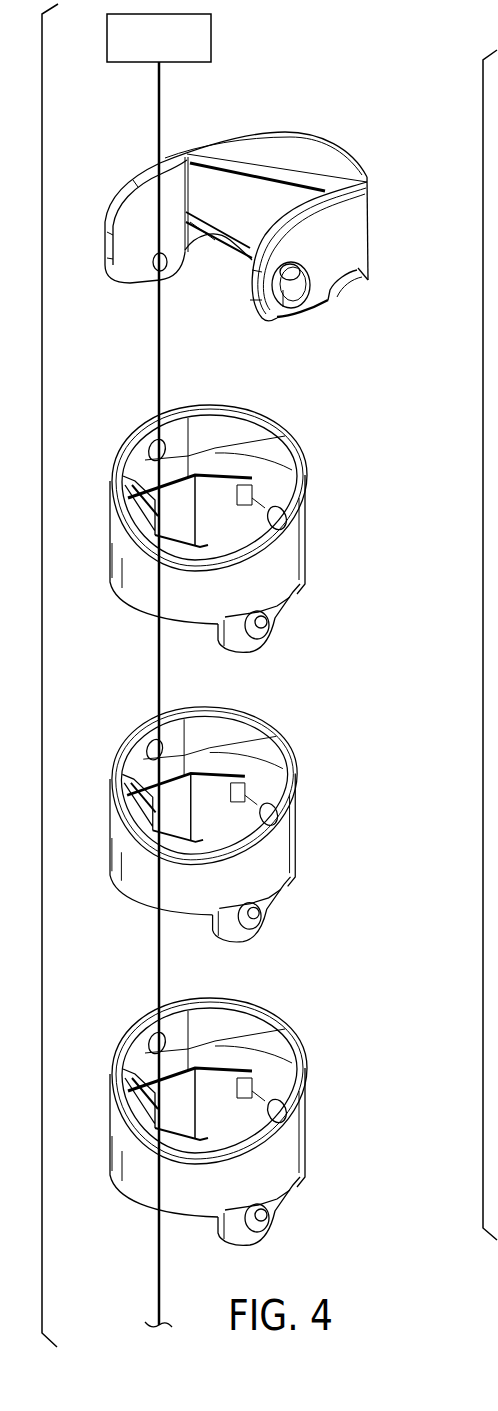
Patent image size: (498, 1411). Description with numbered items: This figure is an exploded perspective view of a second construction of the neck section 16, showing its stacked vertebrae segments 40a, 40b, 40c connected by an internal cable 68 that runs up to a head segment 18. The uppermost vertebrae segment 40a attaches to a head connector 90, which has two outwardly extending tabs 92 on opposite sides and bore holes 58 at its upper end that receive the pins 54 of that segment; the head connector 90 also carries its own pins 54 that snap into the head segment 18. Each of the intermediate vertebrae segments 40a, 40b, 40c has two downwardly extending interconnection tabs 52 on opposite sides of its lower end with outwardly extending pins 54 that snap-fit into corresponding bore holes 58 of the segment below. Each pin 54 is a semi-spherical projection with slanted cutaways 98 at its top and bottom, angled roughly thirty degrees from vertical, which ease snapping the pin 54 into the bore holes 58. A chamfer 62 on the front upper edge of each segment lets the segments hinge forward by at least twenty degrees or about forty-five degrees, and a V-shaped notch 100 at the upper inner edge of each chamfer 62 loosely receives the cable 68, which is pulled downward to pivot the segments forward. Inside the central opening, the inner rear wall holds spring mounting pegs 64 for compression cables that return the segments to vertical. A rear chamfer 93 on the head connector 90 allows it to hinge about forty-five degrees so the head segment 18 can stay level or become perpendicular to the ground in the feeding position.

The neck section 16 is at (269, 216).
The head segment 18 is at (211, 38).
The uppermost vertebrae segment 40a is at (273, 575).
The vertebrae segment 40b is at (270, 872).
The bottommost vertebrae segment 40c is at (273, 1170).
The interconnection tab 52 is at (238, 638).
The pin 54 is at (285, 292).
The bore hole 58 is at (164, 270).
The chamfer 62 is at (150, 552).
The spring mounting peg 64 is at (257, 442).
The cable 68 is at (158, 655).
The head connector 90 is at (355, 243).
The outwardly extending tab 92 is at (132, 270).
The chamfer 93 is at (355, 292).
The cutaway 98 is at (297, 272).
The V-shaped notch 100 is at (153, 528).